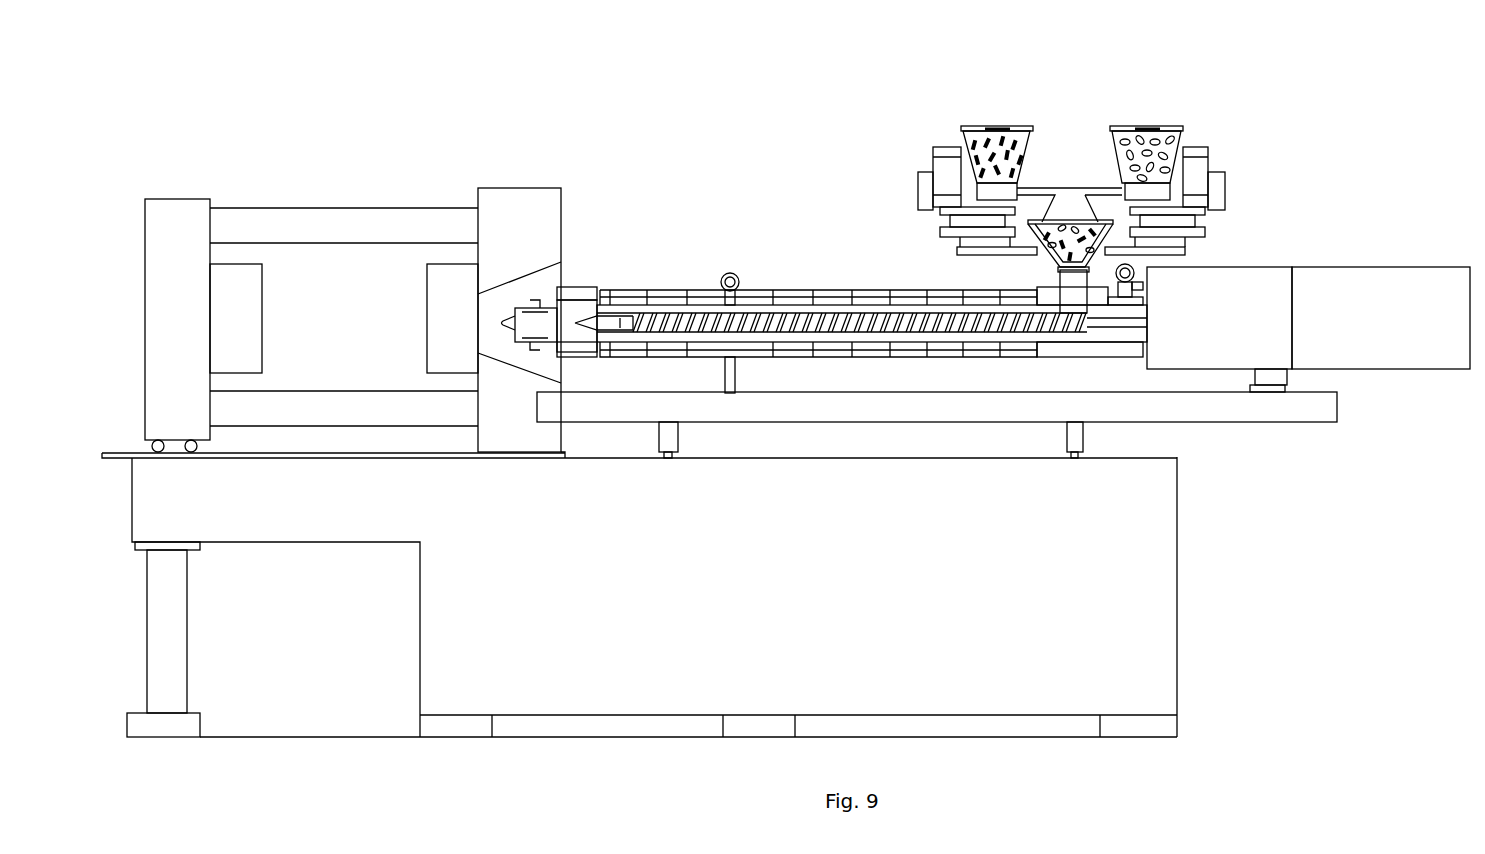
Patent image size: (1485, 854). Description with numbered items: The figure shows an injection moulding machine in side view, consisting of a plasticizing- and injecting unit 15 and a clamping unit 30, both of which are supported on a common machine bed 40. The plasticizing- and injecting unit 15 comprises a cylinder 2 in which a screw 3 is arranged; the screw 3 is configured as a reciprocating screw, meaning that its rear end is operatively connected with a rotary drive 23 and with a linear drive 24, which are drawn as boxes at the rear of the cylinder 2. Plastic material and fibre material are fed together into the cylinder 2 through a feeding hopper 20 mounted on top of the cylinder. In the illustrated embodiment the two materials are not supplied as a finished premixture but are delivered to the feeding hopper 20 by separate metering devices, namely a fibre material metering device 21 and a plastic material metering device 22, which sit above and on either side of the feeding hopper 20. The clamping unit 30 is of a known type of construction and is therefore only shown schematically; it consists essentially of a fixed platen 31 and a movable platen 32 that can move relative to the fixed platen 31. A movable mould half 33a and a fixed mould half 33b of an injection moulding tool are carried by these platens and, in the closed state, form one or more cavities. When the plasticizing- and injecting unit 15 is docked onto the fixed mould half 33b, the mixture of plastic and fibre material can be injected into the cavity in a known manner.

The cylinder 2 is at (645, 310).
The screw 3 is at (840, 315).
The plasticizing- and injecting unit 15 is at (763, 273).
The feeding hopper 20 is at (1065, 225).
The fibre material metering device 21 is at (1202, 173).
The plastic material metering device 22 is at (940, 190).
The rotary drive 23 is at (1253, 298).
The linear drive 24 is at (1422, 317).
The clamping unit 30 is at (335, 167).
The fixed platen 31 is at (528, 232).
The movable platen 32 is at (180, 250).
The movable mould half 33a is at (242, 295).
The fixed mould half 33b is at (450, 327).
The machine bed 40 is at (1143, 678).